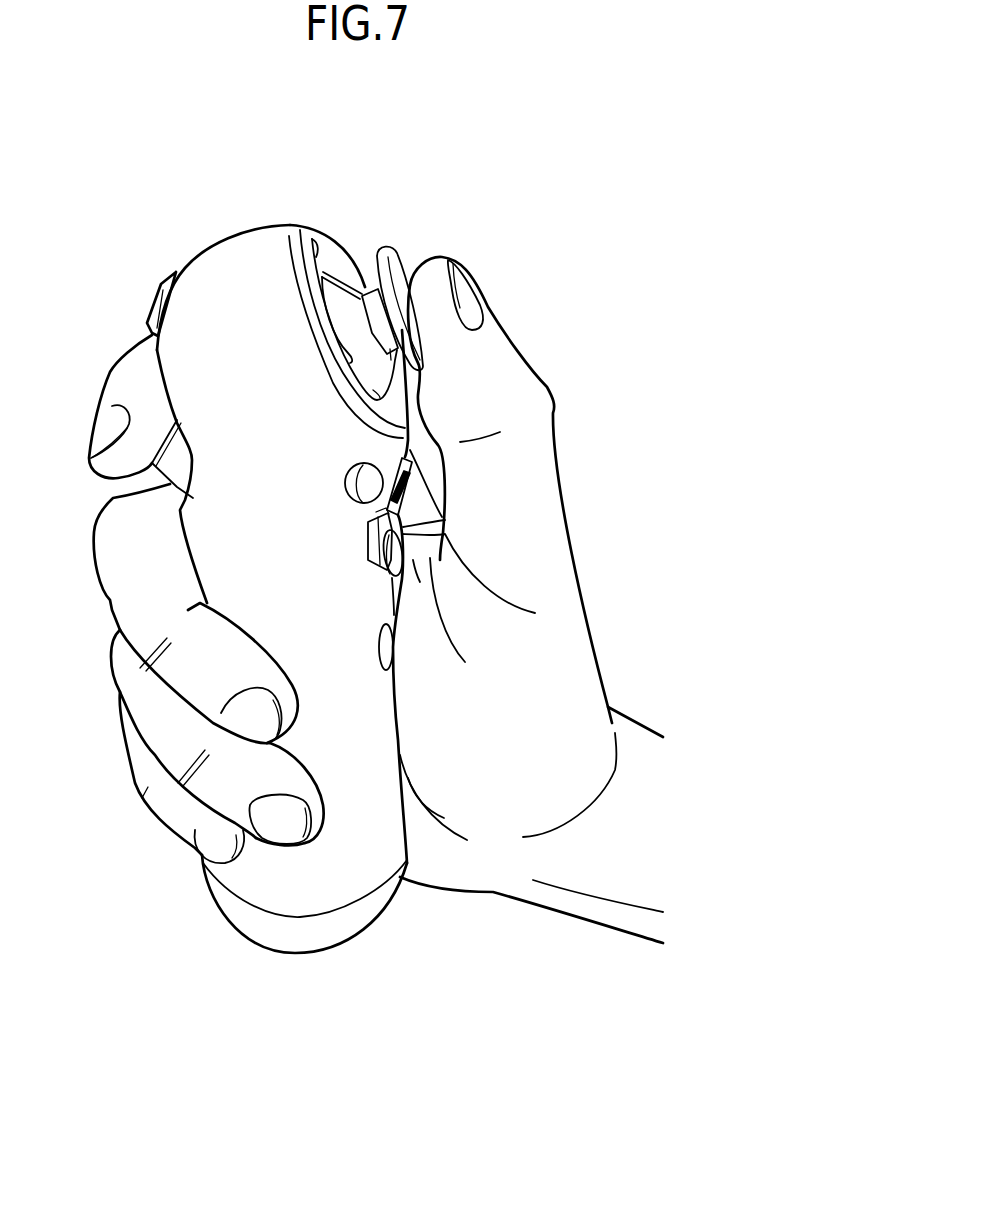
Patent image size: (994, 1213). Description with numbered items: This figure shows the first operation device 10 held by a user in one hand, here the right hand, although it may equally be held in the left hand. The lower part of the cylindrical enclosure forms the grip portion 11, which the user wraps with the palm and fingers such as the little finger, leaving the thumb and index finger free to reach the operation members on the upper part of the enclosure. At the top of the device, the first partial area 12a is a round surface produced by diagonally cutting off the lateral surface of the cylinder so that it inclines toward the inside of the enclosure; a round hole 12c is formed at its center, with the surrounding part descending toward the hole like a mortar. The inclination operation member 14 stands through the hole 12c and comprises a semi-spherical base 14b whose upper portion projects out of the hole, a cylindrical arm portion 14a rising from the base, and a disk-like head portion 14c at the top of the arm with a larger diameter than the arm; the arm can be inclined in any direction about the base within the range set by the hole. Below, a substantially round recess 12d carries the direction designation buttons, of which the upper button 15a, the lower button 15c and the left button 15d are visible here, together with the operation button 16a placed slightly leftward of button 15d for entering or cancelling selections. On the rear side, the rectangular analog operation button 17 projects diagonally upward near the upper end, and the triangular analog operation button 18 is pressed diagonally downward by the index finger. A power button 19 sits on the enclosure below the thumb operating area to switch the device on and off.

The first operation device 10 is at (388, 966).
The grip portion 11 is at (330, 695).
The first partial area 12a is at (283, 227).
The hole 12c is at (357, 357).
The recess 12d is at (393, 574).
The inclination operation member 14 is at (480, 137).
The arm portion 14a is at (363, 292).
The base 14b is at (363, 290).
The head portion 14c is at (392, 265).
The direction designation button 15a is at (413, 478).
The direction designation button 15c is at (403, 548).
The direction designation button 15d is at (364, 546).
The operation button 16a is at (347, 487).
The operation button 17 is at (152, 300).
The operation button 18 is at (178, 458).
The power button 19 is at (388, 653).